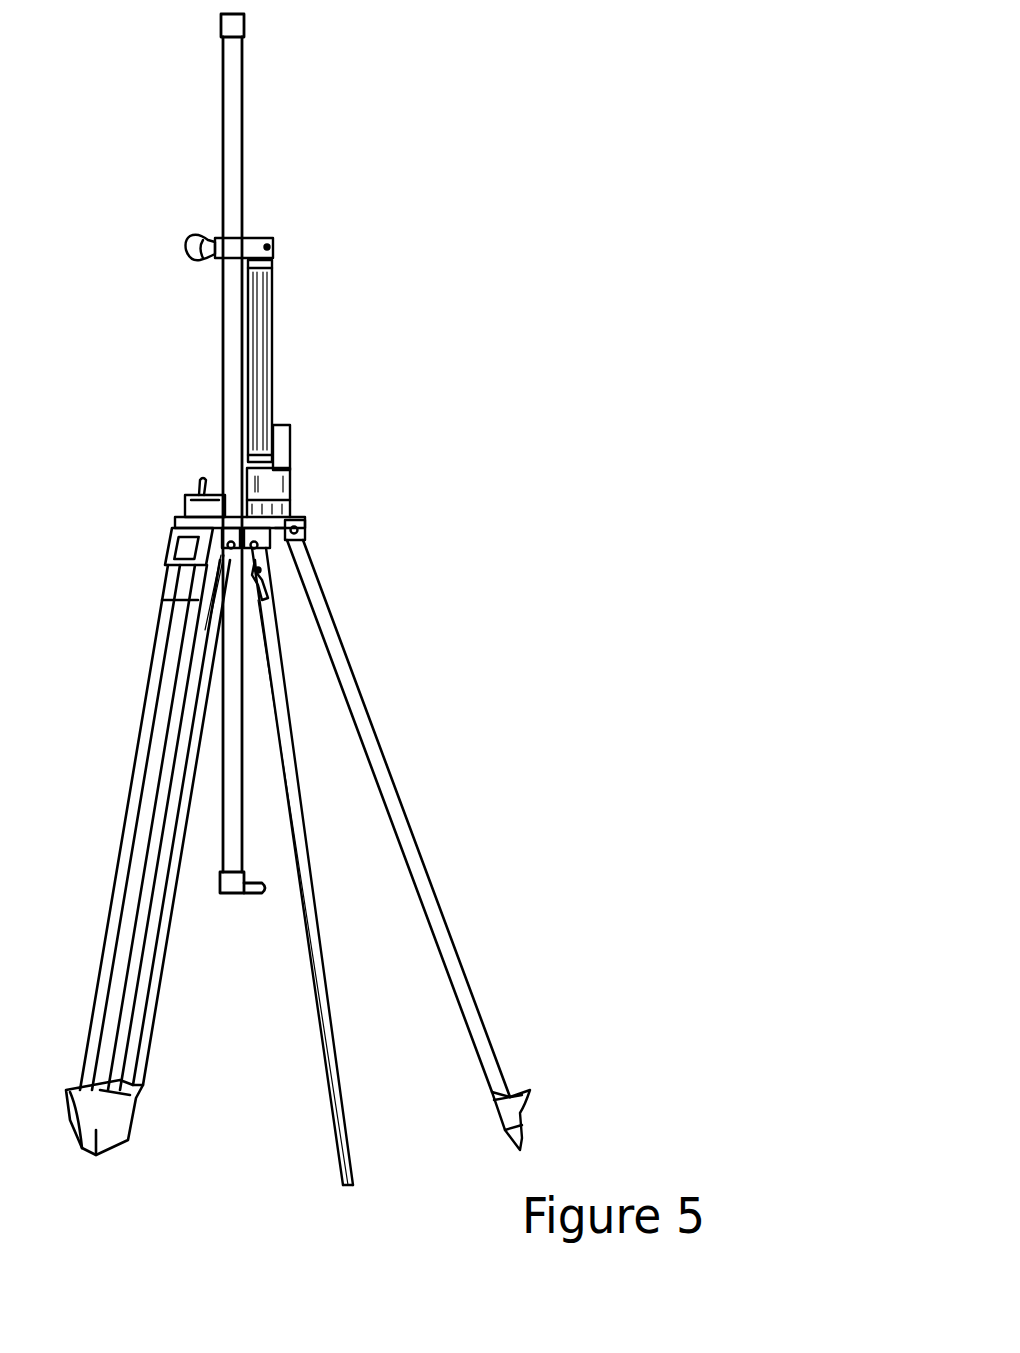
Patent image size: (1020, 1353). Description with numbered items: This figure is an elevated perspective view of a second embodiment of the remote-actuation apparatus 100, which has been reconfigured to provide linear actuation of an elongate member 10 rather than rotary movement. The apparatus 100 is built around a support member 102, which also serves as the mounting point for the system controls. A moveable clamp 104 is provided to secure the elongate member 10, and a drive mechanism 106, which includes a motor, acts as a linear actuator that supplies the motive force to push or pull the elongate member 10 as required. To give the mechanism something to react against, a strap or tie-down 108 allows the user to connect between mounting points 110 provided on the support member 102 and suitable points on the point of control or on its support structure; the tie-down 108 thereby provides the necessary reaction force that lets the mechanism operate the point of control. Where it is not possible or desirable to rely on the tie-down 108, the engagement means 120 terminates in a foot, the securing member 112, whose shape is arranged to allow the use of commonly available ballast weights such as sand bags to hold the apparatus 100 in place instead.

The elongate member 10 is at (243, 104).
The apparatus 100 is at (385, 380).
The support member 102 is at (292, 515).
The moveable clamp 104 is at (270, 240).
The drive mechanism 106 is at (277, 365).
The strap or tie-down 108 is at (280, 690).
The mounting points 110 is at (258, 549).
The securing member 112 is at (537, 1090).
The engagement means 120 is at (423, 840).